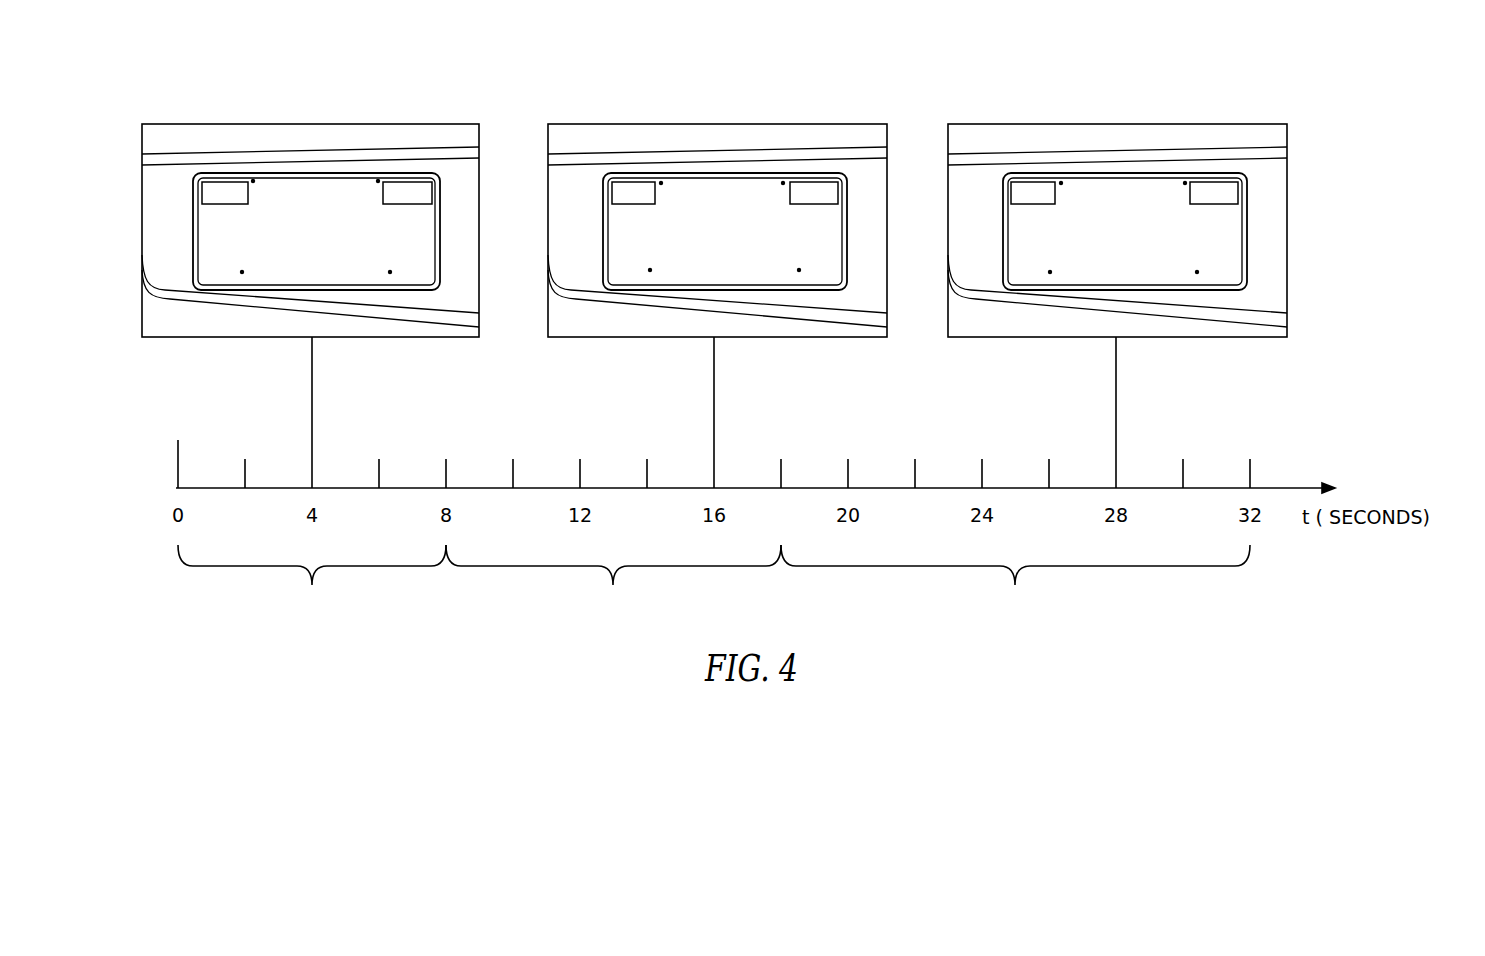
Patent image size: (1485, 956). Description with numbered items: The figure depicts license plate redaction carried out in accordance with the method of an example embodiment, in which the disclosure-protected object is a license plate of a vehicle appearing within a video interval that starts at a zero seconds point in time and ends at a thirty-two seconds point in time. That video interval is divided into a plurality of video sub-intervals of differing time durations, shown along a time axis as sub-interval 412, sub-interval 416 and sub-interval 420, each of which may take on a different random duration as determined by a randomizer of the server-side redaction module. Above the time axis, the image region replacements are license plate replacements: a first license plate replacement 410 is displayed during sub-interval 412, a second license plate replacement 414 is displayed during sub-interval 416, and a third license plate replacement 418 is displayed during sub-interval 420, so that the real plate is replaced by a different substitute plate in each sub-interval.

The first license plate replacement 410 is at (270, 182).
The second license plate replacement 414 is at (680, 182).
The third license plate replacement 418 is at (1080, 182).
The sub-interval 412 is at (312, 579).
The sub-interval 416 is at (613, 579).
The sub-interval 420 is at (1015, 579).